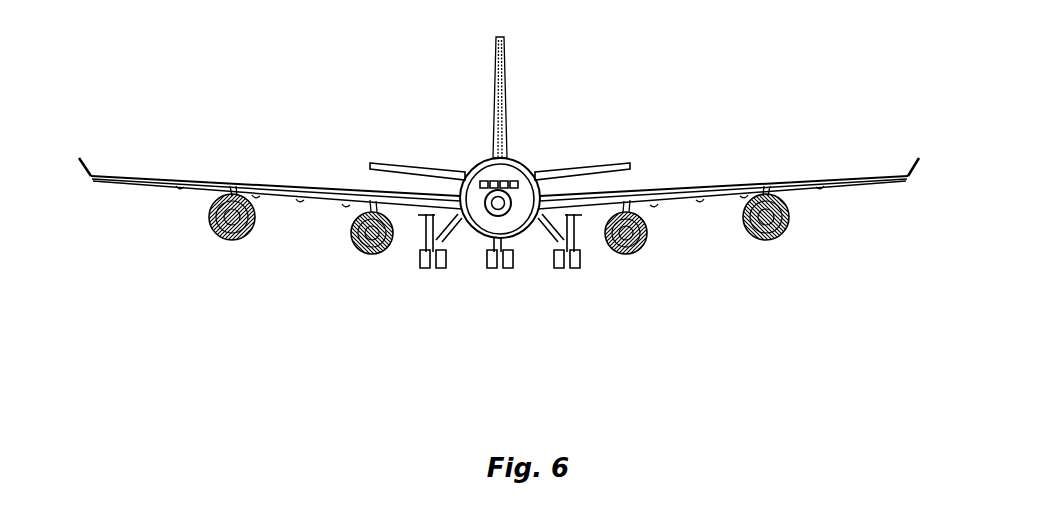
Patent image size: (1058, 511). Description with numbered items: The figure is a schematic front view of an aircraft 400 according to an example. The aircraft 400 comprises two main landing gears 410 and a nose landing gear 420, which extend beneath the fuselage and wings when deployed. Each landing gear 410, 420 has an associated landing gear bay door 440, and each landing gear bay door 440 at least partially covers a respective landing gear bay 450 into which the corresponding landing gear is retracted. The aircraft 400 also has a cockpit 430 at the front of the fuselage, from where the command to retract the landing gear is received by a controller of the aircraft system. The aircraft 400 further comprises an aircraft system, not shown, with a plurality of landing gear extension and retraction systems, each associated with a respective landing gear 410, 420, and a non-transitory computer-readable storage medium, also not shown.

The aircraft 400 is at (589, 107).
The main landing gear 410 is at (421, 286).
The nose landing gear 420 is at (493, 284).
The cockpit 430 is at (491, 180).
The landing gear bay door 440 is at (575, 232).
The landing gear bay 450 is at (454, 230).